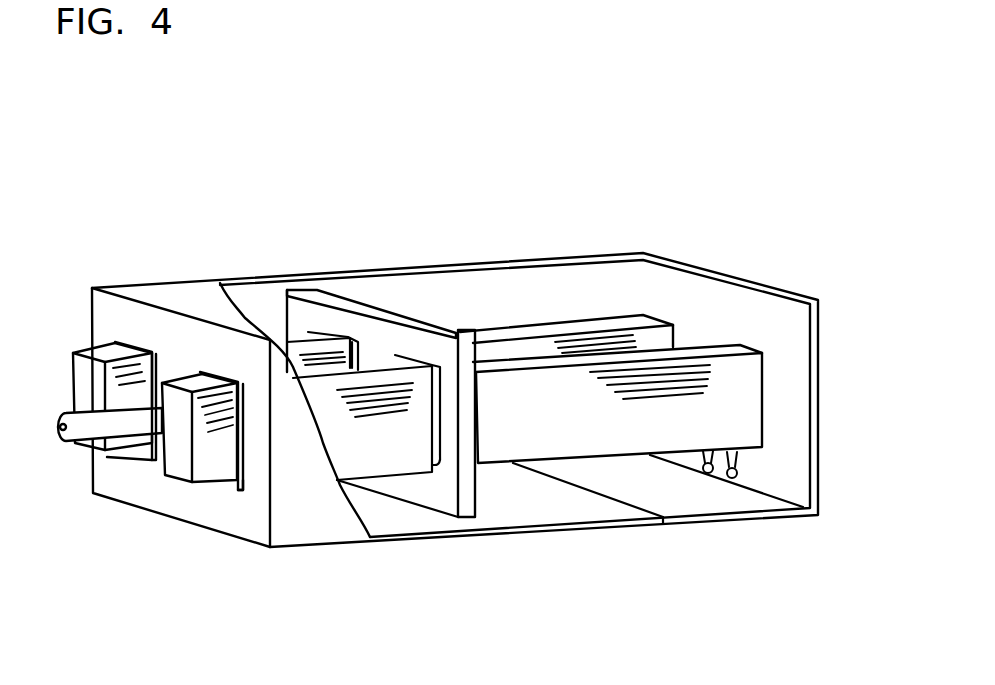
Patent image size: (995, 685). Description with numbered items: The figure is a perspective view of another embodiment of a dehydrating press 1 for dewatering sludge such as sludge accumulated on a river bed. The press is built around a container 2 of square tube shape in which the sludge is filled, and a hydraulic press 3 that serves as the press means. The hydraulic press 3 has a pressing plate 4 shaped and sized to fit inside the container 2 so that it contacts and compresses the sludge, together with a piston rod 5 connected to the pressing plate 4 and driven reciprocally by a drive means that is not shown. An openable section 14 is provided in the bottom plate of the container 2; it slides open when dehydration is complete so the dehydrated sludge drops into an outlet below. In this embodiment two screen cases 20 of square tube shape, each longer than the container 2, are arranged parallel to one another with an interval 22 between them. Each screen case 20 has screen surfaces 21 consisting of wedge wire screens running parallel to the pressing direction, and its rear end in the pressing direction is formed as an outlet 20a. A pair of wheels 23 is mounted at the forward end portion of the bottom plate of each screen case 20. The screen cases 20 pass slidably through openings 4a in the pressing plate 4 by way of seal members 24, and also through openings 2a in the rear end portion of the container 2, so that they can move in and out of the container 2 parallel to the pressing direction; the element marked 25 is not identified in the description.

The dehydrating press 1 is at (521, 157).
The container 2 is at (568, 260).
The openings 2a is at (213, 370).
The hydraulic press 3 is at (312, 319).
The pressing plate 4 is at (375, 334).
The openings 4a is at (342, 335).
The piston rod 5 is at (85, 418).
The openable section 14 is at (682, 495).
The screen cases 20 is at (523, 347).
The outlet 20a is at (180, 460).
The screen surfaces 21 is at (598, 435).
The interval 22 is at (667, 340).
The wheels 23 is at (710, 473).
The seal members 24 is at (442, 455).
The plate hook 25 is at (247, 467).